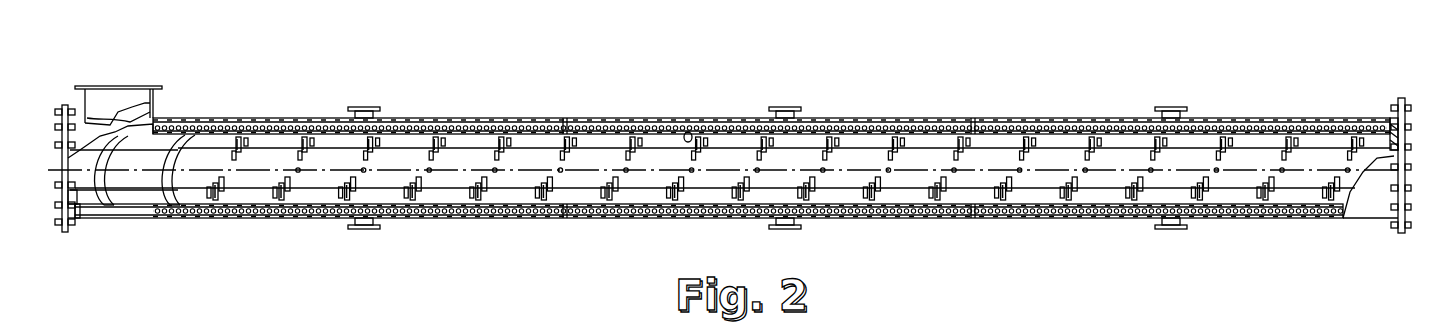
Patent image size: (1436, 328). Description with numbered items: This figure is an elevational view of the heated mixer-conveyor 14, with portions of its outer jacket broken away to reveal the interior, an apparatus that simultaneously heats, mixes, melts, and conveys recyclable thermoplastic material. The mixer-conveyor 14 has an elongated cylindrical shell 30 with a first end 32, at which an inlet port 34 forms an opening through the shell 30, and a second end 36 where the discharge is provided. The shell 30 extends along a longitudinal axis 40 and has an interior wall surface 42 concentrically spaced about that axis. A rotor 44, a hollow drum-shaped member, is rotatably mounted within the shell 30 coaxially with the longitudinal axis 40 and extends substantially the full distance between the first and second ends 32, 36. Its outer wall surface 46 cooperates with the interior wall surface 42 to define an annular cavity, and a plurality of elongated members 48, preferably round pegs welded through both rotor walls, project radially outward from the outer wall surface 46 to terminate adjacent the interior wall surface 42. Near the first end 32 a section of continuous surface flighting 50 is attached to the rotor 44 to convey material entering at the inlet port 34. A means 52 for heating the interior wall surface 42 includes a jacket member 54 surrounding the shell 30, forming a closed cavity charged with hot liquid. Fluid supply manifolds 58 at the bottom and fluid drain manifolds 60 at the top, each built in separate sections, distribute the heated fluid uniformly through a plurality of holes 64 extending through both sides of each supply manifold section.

The heated mixer-conveyor 14 is at (982, 82).
The elongated shell 30 is at (1035, 195).
The first end 32 is at (172, 100).
The inlet port 34 is at (115, 95).
The second end 36 is at (1379, 226).
The longitudinal axis 40 is at (915, 168).
The interior wall surface 42 is at (688, 133).
The rotor 44 is at (645, 178).
The outer wall surface 46 is at (708, 185).
The elongated members 48 is at (567, 142).
The continuous surface flighting 50 is at (140, 197).
The means for heating 52 is at (436, 111).
The jacket member 54 is at (1083, 215).
The fluid supply manifolds 58 is at (878, 212).
The fluid drain manifolds 60 is at (893, 120).
The holes 64 is at (462, 212).